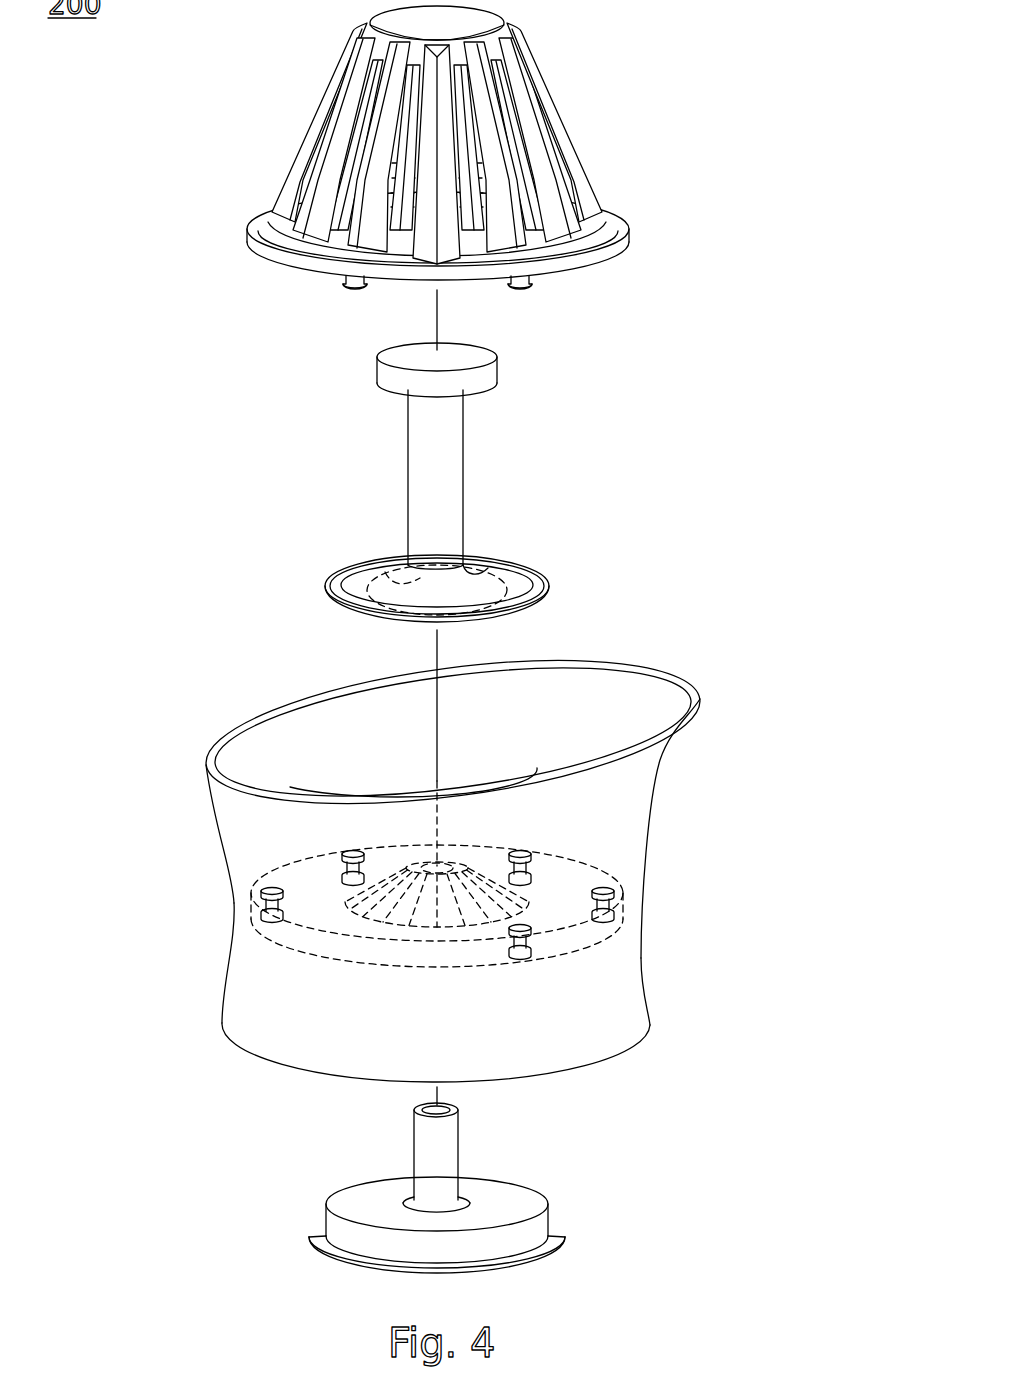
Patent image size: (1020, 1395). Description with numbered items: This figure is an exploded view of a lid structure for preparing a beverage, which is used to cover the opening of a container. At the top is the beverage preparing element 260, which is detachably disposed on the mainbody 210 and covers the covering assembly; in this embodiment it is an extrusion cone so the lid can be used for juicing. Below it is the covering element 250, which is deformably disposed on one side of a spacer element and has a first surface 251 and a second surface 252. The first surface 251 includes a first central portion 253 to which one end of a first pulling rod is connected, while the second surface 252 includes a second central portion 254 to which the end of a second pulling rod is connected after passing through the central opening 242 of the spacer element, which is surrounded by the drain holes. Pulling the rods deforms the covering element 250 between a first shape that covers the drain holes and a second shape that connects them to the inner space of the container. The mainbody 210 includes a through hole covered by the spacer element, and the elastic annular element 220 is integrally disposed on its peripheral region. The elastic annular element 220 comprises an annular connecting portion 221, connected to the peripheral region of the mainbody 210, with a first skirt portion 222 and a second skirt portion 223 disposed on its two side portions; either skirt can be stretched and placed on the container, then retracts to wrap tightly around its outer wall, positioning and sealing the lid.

The beverage preparing element 260 is at (302, 148).
The covering element 250 is at (453, 491).
The first surface 251 is at (470, 562).
The second surface 252 is at (507, 617).
The first central portion 253 is at (466, 560).
The second central portion 254 is at (373, 567).
The mainbody 210 is at (292, 881).
The central opening 242 is at (437, 863).
The elastic annular element 220 is at (542, 859).
The annular connecting portion 221 is at (632, 907).
The first skirt portion 222 is at (662, 745).
The second skirt portion 223 is at (640, 1021).